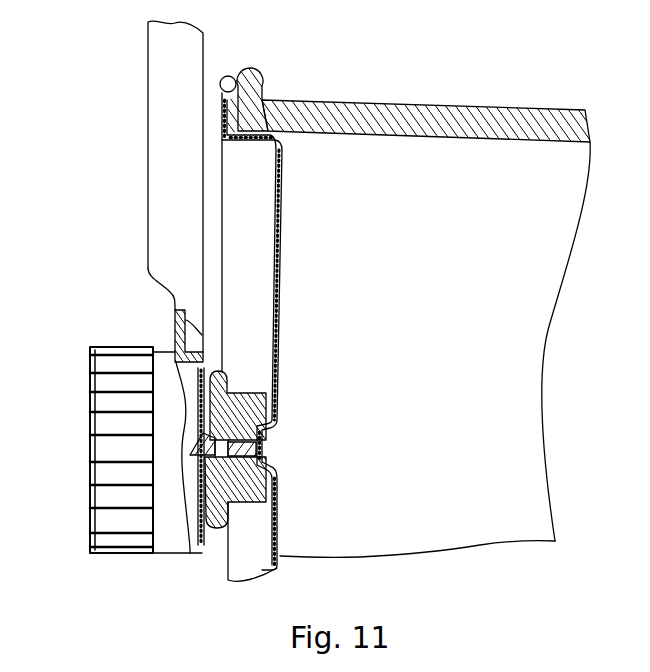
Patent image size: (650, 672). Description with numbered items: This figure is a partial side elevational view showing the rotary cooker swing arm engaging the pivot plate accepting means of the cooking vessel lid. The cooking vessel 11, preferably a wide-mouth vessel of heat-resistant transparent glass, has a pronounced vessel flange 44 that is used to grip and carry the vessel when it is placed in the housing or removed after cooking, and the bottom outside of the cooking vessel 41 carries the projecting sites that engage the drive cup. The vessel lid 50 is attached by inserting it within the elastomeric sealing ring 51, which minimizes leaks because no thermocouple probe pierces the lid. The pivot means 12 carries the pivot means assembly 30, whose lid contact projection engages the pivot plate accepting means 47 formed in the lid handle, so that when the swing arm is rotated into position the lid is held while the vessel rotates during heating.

The cooking vessel 11 is at (424, 157).
The pivot means 12 is at (165, 151).
The pivot means assembly 30 is at (112, 424).
The cooking vessel bottom outside 41 is at (524, 118).
The vessel flange 44 is at (252, 66).
The pivot plate accepting means 47 is at (216, 375).
The vessel lid 50 is at (287, 187).
The elastomeric sealing ring 51 is at (229, 76).